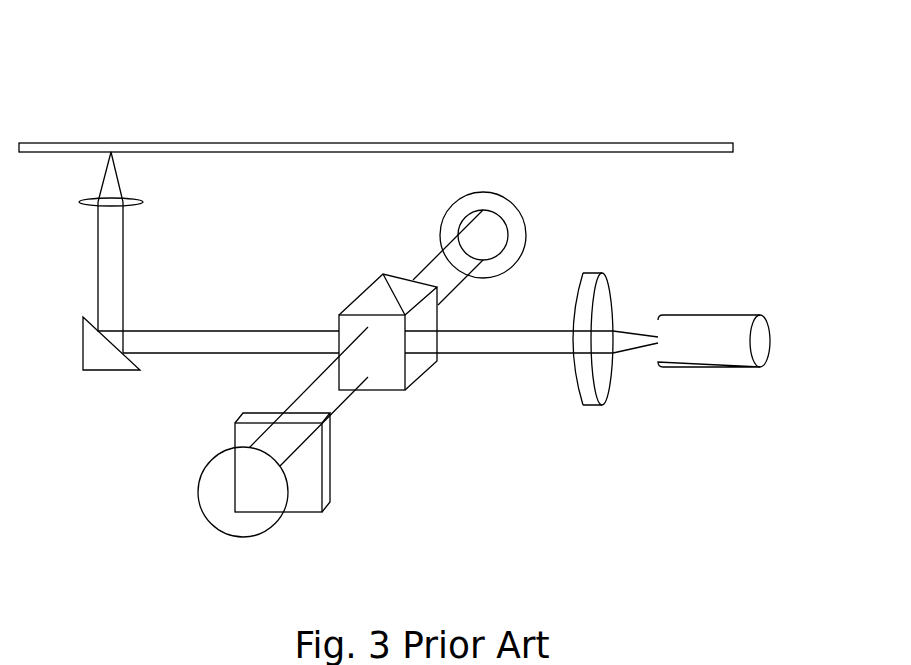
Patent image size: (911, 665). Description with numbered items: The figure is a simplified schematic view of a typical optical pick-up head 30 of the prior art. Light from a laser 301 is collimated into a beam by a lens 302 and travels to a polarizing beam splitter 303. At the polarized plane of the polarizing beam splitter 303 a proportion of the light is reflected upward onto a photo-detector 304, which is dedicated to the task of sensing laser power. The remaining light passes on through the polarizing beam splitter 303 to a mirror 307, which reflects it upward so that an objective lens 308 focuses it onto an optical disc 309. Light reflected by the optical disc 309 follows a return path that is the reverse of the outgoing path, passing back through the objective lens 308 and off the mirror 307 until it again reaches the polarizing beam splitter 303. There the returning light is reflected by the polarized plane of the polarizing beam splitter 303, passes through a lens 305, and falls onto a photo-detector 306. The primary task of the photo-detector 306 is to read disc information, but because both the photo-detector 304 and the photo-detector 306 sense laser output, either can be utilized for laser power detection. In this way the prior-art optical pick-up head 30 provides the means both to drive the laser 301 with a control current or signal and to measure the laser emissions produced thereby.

The prior art optical system 30 is at (790, 92).
The laser 301 is at (702, 313).
The lens 302 is at (593, 272).
The polarizing beam splitter 303 is at (423, 370).
The photo-detector 304 is at (524, 220).
The lens 305 is at (322, 512).
The photo-detector 306 is at (257, 537).
The mirror 307 is at (107, 370).
The objective lens 308 is at (143, 202).
The optical disc 309 is at (377, 143).